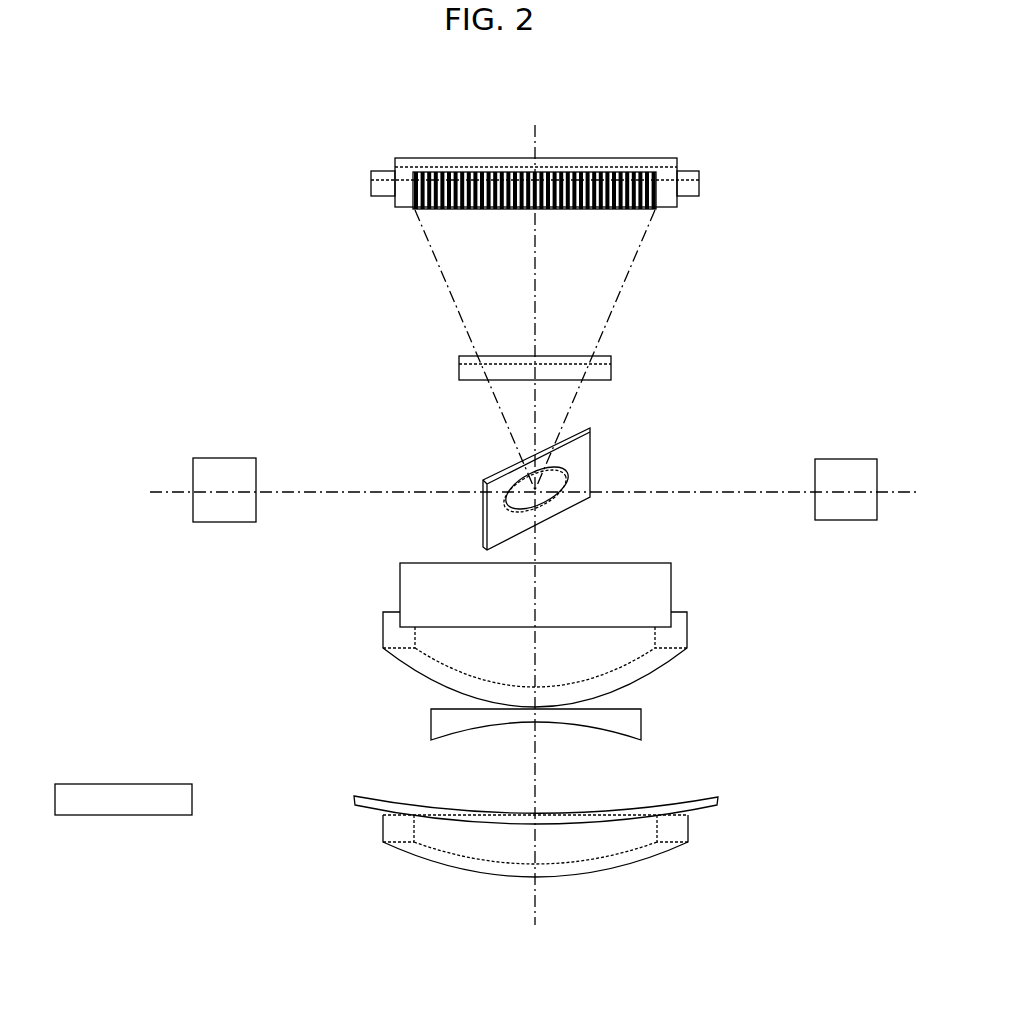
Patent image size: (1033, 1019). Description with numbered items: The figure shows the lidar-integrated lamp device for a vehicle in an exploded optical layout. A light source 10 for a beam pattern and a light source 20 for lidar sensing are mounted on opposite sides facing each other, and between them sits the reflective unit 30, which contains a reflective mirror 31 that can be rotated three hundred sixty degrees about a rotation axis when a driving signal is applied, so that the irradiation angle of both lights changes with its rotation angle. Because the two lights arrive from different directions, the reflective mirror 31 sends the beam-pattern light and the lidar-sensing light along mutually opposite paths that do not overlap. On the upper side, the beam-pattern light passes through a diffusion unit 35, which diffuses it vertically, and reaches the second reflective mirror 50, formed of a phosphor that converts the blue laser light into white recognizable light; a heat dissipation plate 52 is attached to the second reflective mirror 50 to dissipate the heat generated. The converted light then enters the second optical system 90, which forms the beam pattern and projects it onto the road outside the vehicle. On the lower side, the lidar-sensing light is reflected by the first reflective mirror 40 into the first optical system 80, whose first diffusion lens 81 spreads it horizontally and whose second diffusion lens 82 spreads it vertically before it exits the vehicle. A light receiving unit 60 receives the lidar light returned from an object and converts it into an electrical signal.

The light source for a beam pattern 10 is at (227, 467).
The light source for lidar sensing 20 is at (842, 467).
The reflective unit 30 is at (468, 466).
The reflective mirror 31 is at (553, 480).
The diffusion unit 35 is at (607, 358).
The first reflective mirror 40 is at (413, 585).
The second reflective mirror 50 is at (595, 172).
The heat dissipation plate 52 is at (380, 175).
The light receiving unit 60 is at (125, 790).
The first optical system 80 is at (606, 753).
The first diffusion lens 81 is at (633, 723).
The second diffusion lens 82 is at (599, 796).
The second optical system 90 is at (397, 832).